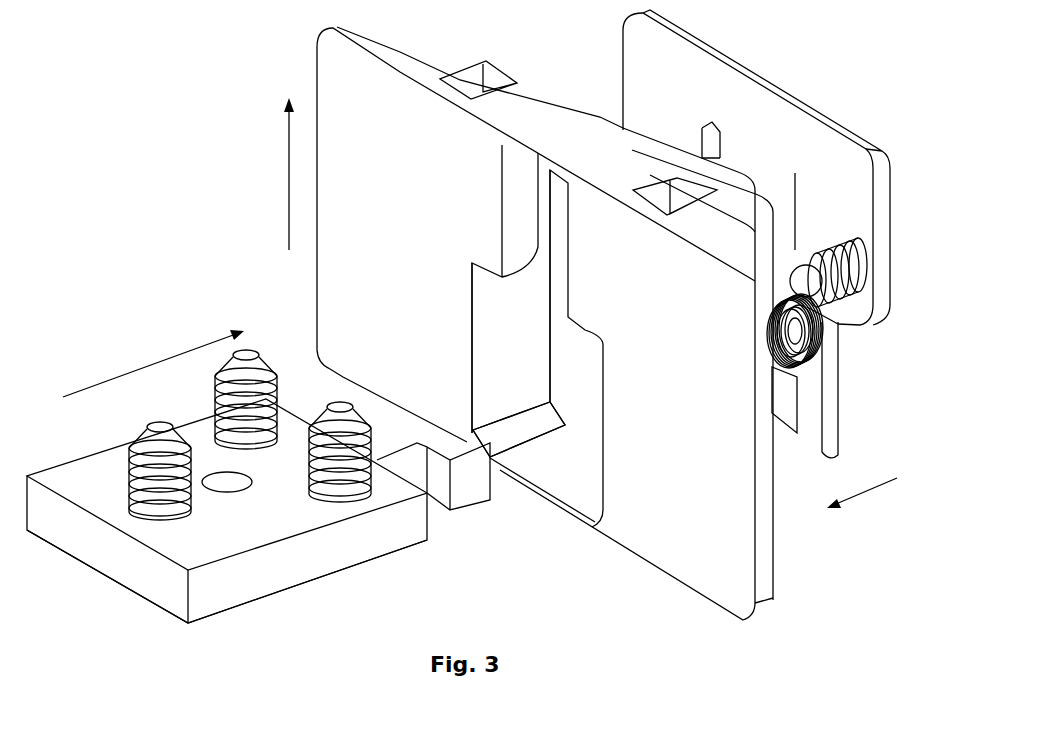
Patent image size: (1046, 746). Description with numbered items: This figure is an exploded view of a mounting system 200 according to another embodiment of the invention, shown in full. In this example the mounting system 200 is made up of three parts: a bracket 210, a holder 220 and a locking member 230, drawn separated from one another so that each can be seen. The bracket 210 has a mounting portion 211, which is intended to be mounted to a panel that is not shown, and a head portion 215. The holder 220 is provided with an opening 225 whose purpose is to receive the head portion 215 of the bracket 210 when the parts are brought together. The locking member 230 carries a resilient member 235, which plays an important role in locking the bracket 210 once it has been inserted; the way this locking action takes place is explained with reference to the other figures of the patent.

The mounting system 200 is at (166, 92).
The bracket 210 is at (96, 484).
The mounting portion 211 is at (302, 515).
The head portion 215 is at (403, 417).
The holder 220 is at (336, 184).
The opening 225 is at (572, 425).
The locking member 230 is at (702, 62).
The resilient member 235 is at (740, 183).